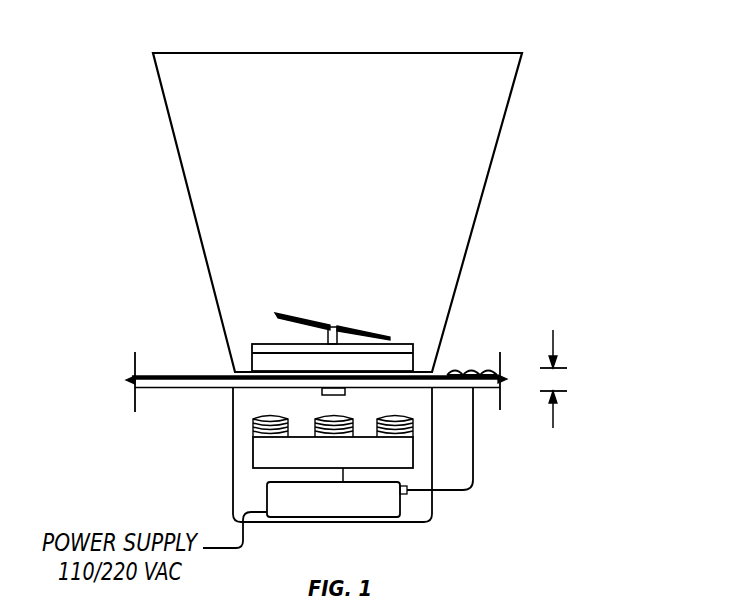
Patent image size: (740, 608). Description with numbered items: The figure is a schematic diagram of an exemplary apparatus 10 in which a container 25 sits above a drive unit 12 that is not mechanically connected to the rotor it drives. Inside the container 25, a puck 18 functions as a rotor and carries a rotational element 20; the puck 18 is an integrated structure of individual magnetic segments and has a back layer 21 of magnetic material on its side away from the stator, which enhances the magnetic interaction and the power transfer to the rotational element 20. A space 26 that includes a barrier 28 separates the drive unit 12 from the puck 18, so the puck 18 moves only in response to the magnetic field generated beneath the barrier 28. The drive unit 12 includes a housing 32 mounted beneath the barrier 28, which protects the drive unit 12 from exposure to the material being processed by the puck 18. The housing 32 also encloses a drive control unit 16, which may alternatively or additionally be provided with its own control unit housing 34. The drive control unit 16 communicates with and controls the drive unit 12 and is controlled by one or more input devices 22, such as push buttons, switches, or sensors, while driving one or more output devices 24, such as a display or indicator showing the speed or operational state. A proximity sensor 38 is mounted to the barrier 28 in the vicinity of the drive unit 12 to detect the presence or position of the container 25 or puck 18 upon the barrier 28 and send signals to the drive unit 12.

The apparatus 10 is at (472, 45).
The container 25 is at (497, 152).
The puck 18 is at (417, 352).
The rotational element 20 is at (333, 326).
The back layer 21 is at (278, 343).
The barrier 28 is at (190, 375).
The input device 22 is at (485, 370).
The output device 24 is at (472, 373).
The space 26 is at (555, 378).
The housing 32 is at (233, 455).
The proximity sensor 38 is at (330, 395).
The drive unit 12 is at (413, 441).
The drive control unit 16 is at (328, 510).
The control unit housing 34 is at (362, 521).